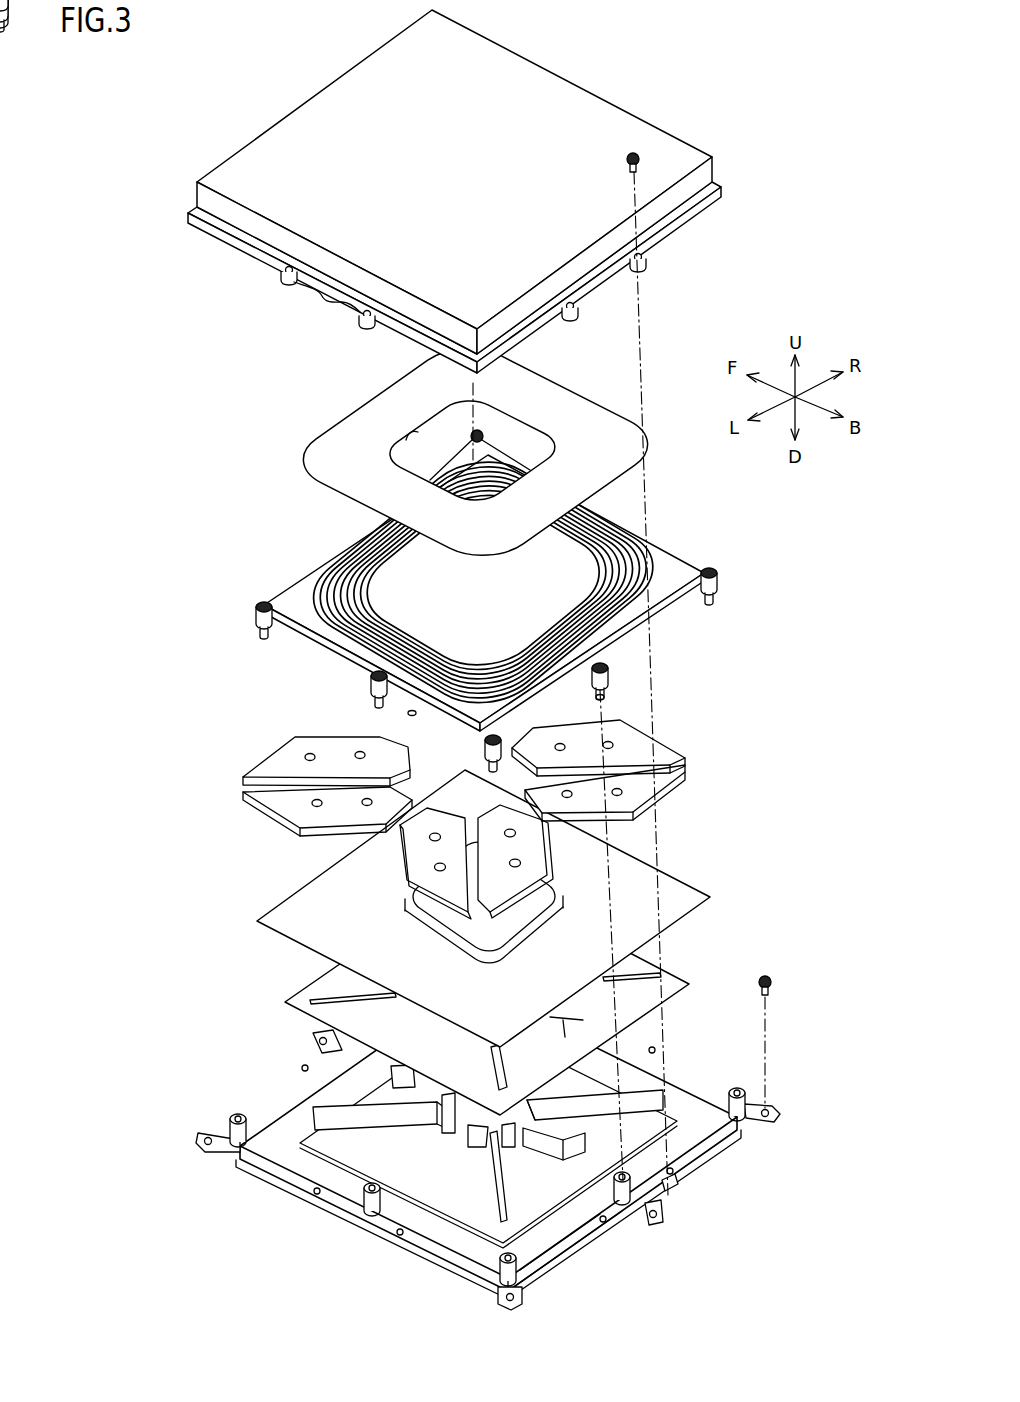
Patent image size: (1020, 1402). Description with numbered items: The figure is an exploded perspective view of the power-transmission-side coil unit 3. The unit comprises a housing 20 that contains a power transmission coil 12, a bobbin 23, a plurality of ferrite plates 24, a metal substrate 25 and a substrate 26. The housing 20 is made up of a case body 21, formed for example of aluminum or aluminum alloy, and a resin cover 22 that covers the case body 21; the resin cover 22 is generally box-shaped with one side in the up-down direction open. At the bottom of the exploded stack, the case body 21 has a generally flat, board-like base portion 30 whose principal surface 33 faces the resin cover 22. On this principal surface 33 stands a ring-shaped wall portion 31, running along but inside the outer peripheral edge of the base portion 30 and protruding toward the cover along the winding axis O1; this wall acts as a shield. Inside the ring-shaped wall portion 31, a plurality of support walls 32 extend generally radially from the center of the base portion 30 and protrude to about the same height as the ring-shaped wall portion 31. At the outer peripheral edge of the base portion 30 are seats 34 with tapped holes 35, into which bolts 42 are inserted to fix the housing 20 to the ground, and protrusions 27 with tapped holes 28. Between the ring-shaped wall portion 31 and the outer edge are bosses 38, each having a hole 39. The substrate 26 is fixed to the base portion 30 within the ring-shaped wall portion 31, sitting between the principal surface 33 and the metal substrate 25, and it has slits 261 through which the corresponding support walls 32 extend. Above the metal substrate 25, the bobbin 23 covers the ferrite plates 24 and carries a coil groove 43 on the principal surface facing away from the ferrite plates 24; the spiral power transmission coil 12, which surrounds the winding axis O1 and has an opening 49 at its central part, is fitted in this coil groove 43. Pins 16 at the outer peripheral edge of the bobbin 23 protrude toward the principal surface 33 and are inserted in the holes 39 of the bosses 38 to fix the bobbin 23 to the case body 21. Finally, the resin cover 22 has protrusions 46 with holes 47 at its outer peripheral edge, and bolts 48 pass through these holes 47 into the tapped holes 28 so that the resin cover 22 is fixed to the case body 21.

The power-transmission-side coil unit 3 is at (699, 84).
The power transmission coil 12 is at (340, 452).
The pins 16 is at (370, 687).
The housing 20 is at (390, 655).
The case body 21 is at (200, 1138).
The resin cover 22 is at (313, 121).
The bobbin 23 is at (276, 597).
The ferrite plates 24 is at (262, 765).
The metal substrate 25 is at (308, 895).
The substrate 26 is at (298, 1000).
The slits 261 is at (335, 993).
The protrusions 27 is at (318, 1200).
The tapped holes 28 is at (300, 1188).
The base portion 30 is at (545, 1268).
The ring-shaped wall portion 31 is at (320, 1058).
The support walls 32 is at (330, 1104).
The principal surface 33 is at (542, 1255).
The seats 34 is at (660, 1222).
The tapped holes 35 is at (668, 1188).
The bosses 38 is at (372, 1205).
The holes 39 is at (370, 1192).
The bolts 42 is at (774, 983).
The coil groove 43 is at (312, 577).
The protrusions 46 is at (283, 282).
The holes 47 is at (280, 262).
The bolts 48 is at (643, 156).
The opening 49 is at (405, 432).
The winding axis O1 is at (473, 394).